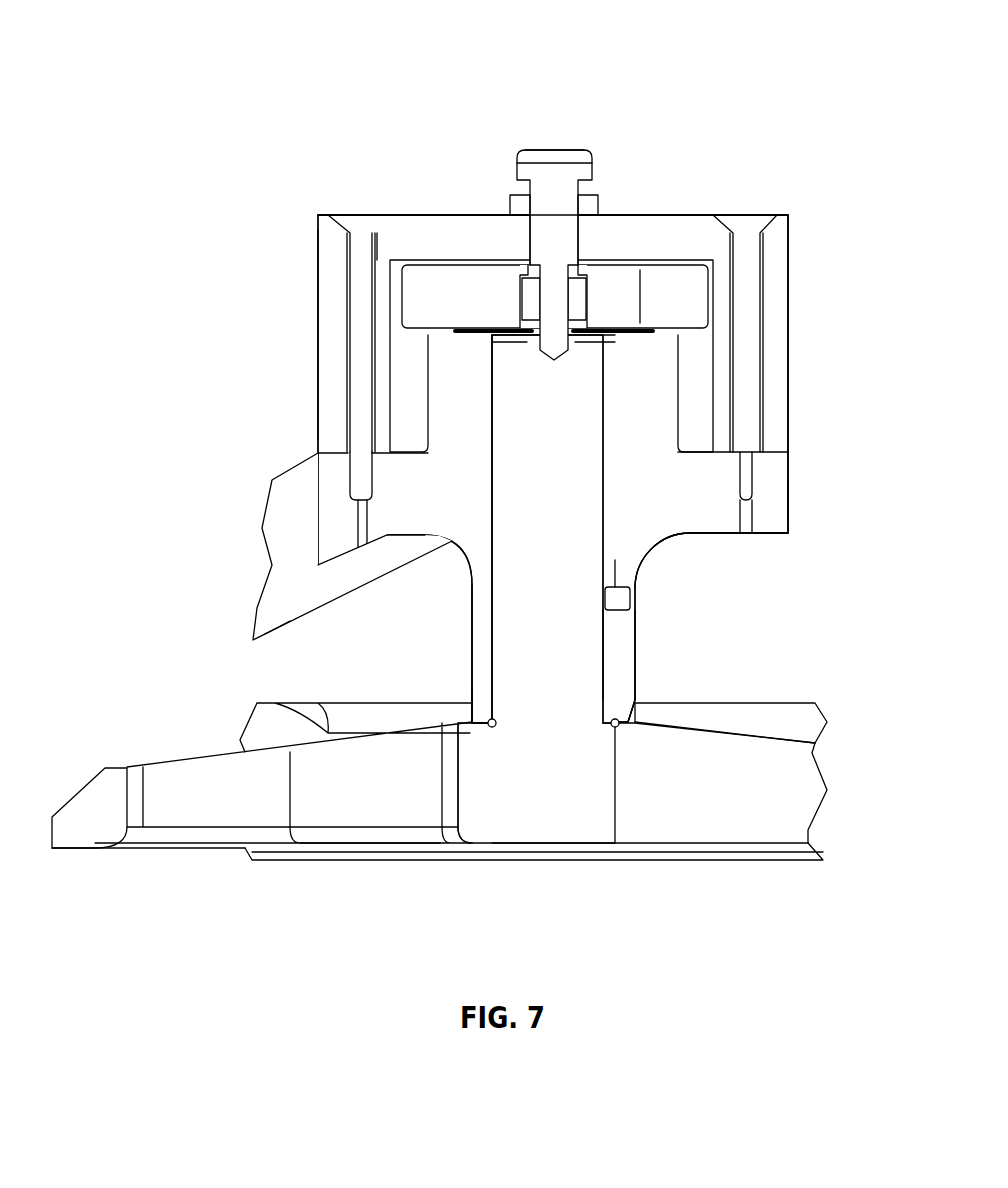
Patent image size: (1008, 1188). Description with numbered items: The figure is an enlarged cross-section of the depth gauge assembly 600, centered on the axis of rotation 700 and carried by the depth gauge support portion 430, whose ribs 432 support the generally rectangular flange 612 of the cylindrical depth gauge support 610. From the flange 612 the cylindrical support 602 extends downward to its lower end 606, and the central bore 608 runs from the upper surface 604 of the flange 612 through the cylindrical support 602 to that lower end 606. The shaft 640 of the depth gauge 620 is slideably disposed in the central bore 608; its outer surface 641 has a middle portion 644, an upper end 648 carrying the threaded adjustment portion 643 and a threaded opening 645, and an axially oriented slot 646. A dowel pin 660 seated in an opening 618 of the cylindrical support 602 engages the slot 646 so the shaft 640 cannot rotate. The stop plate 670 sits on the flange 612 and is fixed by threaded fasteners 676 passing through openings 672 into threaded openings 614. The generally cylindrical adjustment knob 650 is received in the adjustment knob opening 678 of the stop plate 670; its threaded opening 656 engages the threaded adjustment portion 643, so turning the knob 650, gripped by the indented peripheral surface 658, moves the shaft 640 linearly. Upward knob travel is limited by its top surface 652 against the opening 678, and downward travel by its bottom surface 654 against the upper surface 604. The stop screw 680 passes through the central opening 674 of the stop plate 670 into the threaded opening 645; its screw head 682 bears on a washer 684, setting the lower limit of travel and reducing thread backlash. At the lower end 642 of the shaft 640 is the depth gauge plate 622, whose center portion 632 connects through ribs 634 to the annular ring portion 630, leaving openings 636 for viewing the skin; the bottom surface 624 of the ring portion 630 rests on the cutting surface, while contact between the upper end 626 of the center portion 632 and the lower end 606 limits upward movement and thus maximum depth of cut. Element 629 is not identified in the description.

The axis of rotation 700 is at (566, 66).
The depth gauge assembly 600 is at (772, 138).
The stop screw 680 is at (556, 158).
The screw head 682 is at (590, 150).
The washer 684 is at (515, 200).
The central opening 674 is at (585, 240).
The adjustment knob 650 is at (752, 230).
The threaded opening 656 is at (675, 285).
The threaded fasteners 676 is at (752, 222).
The adjustment knob opening 678 is at (405, 280).
The top surface 652 is at (450, 266).
The peripheral surface 658 is at (400, 300).
The upper surface 604 is at (520, 300).
The bottom surface 654 is at (470, 331).
The threaded opening 645 is at (528, 345).
The threaded adjustment portion 643 is at (600, 335).
The openings 672 is at (762, 297).
The stop plate 670 is at (792, 340).
The cylindrical depth gauge support 610 is at (790, 462).
The flange 612 is at (790, 495).
The threaded openings 614 is at (760, 538).
The depth gauge support portion 430 is at (290, 555).
The ribs 432 is at (295, 612).
The central bore 608 is at (490, 525).
The middle portion 644 is at (482, 612).
The cylindrical support 602 is at (475, 650).
The lower end 606 is at (470, 724).
The outer surface 641 is at (478, 700).
The upper end 648 is at (567, 452).
The opening 618 is at (622, 578).
The dowel pin 660 is at (636, 597).
The slot 646 is at (605, 630).
The shaft 640 is at (588, 695).
The upper end 626 is at (670, 703).
The depth gauge plate 622 is at (120, 748).
The annular ring portion 630 is at (95, 840).
The openings 636 is at (356, 822).
The center portion 632 is at (470, 793).
The depth gauge 620 is at (496, 902).
The lower end 642 is at (548, 800).
The interface 629 is at (616, 798).
The ribs 634 is at (678, 803).
The bottom surface 624 is at (802, 845).